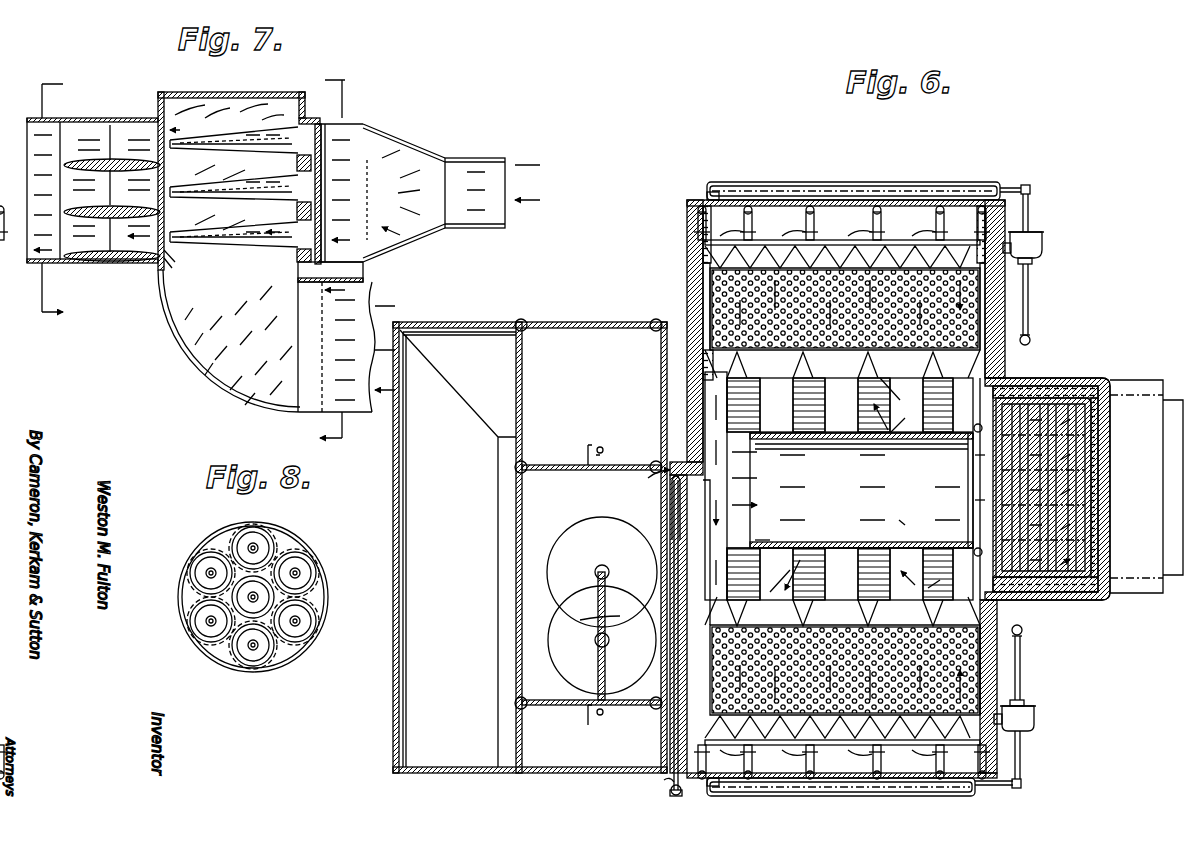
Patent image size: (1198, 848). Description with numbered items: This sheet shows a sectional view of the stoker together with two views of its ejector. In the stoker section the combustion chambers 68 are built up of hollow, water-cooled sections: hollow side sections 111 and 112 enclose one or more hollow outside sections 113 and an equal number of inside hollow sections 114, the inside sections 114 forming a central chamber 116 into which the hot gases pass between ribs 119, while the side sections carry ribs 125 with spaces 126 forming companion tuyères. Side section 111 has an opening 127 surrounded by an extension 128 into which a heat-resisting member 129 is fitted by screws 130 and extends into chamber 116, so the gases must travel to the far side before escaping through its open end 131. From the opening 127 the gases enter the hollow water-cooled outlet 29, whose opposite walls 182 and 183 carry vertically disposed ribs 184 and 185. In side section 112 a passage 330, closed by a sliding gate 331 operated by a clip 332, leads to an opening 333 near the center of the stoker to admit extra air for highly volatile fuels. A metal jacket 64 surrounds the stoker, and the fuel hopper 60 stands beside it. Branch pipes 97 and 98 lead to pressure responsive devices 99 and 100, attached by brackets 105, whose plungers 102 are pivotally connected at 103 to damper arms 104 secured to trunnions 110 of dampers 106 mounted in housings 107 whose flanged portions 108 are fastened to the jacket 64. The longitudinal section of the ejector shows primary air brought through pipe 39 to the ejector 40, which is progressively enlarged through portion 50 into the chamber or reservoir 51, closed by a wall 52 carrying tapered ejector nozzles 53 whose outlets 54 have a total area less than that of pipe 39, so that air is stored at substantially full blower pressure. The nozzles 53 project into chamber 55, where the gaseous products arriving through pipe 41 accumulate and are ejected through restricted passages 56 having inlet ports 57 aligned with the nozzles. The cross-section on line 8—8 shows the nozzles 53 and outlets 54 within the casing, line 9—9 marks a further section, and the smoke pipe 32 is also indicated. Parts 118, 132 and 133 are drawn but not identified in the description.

In FIG. 7, the section line 8— 8 is at (44, 203).
In FIG. 7, the section line 9— 9 is at (340, 264).
In FIG. 6, the outlet 29 is at (1172, 402).
In FIG. 7, the smoke pipe 32 is at (62, 264).
In FIG. 8, the smoke pipe 32 is at (306, 642).
In FIG. 7, the pipe 39 is at (490, 160).
In FIG. 7, the ejector 40 is at (405, 142).
In FIG. 7, the pipe 41 is at (232, 392).
In FIG. 7, the enlarged portion 50 is at (402, 236).
In FIG. 7, the chamber 51 is at (366, 262).
In FIG. 7, the wall 52 is at (340, 124).
In FIG. 7, the tapered ejector nozzles 53 is at (205, 140).
In FIG. 7, the nozzle outlets 54 is at (178, 192).
In FIG. 8, the nozzle outlets 54 is at (292, 572).
In FIG. 7, the chamber 55 is at (262, 106).
In FIG. 7, the ducts 56 is at (125, 200).
In FIG. 8, the ducts 56 is at (316, 560).
In FIG. 7, the inlet ports 57 is at (165, 262).
In FIG. 6, the fuel hopper 60 is at (398, 700).
In FIG. 6, the metal jacket 64 is at (688, 214).
In FIG. 6, the combustion chambers 68 is at (960, 318).
In FIG. 6, the branch pipe 97 is at (1031, 342).
In FIG. 6, the branch pipe 98 is at (1023, 632).
In FIG. 6, the pressure responsive device 99 is at (1044, 240).
In FIG. 6, the pressure responsive device 100 is at (1036, 720).
In FIG. 6, the plungers 102 is at (1029, 296).
In FIG. 6, the pivot connection 103 is at (1030, 186).
In FIG. 6, the damper arms 104 is at (1002, 184).
In FIG. 6, the brackets 105 is at (1032, 262).
In FIG. 6, the dampers 106 is at (815, 186).
In FIG. 6, the housings 107 is at (860, 186).
In FIG. 6, the flanged portions 108 is at (760, 186).
In FIG. 6, the trunnions 110 is at (1029, 214).
In FIG. 6, the side section 111 is at (940, 590).
In FIG. 6, the side section 112 is at (728, 416).
In FIG. 6, the outside sections 113 is at (830, 240).
In FIG. 6, the inside sections 114 is at (850, 490).
In FIG. 6, the central chamber 116 is at (846, 390).
In FIG. 6, the grate 118 is at (830, 745).
In FIG. 6, the ribs 119 is at (820, 436).
In FIG. 6, the ribs 125 is at (841, 481).
In FIG. 6, the tuyère spaces 126 is at (906, 496).
In FIG. 6, the opening 127 is at (970, 460).
In FIG. 6, the extension 128 is at (960, 444).
In FIG. 6, the outlet member 129 is at (904, 540).
In FIG. 6, the screws 130 is at (976, 426).
In FIG. 6, the open end 131 is at (795, 514).
In FIG. 6, the support 132 is at (842, 456).
In FIG. 6, the drain pipe 133 is at (680, 790).
In FIG. 6, the wall 182 is at (996, 500).
In FIG. 6, the wall 183 is at (1100, 490).
In FIG. 6, the rib 184 is at (996, 480).
In FIG. 6, the rib 185 is at (1070, 468).
In FIG. 6, the passage 330 is at (662, 720).
In FIG. 6, the sliding gate 331 is at (668, 782).
In FIG. 6, the clip 332 is at (672, 792).
In FIG. 6, the opening 333 is at (668, 478).